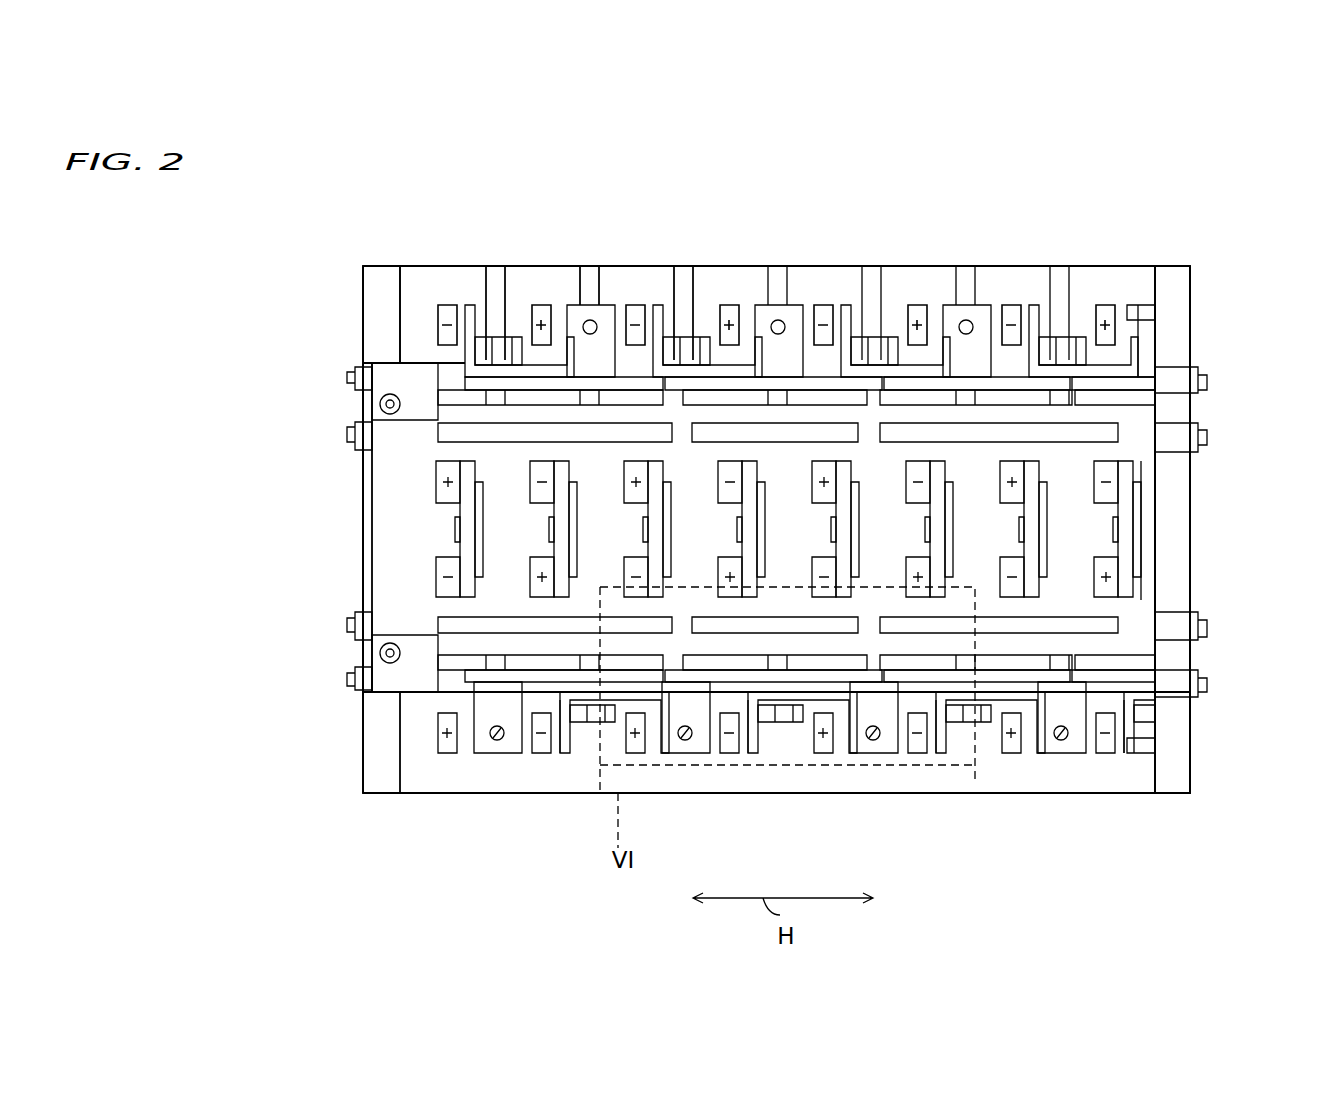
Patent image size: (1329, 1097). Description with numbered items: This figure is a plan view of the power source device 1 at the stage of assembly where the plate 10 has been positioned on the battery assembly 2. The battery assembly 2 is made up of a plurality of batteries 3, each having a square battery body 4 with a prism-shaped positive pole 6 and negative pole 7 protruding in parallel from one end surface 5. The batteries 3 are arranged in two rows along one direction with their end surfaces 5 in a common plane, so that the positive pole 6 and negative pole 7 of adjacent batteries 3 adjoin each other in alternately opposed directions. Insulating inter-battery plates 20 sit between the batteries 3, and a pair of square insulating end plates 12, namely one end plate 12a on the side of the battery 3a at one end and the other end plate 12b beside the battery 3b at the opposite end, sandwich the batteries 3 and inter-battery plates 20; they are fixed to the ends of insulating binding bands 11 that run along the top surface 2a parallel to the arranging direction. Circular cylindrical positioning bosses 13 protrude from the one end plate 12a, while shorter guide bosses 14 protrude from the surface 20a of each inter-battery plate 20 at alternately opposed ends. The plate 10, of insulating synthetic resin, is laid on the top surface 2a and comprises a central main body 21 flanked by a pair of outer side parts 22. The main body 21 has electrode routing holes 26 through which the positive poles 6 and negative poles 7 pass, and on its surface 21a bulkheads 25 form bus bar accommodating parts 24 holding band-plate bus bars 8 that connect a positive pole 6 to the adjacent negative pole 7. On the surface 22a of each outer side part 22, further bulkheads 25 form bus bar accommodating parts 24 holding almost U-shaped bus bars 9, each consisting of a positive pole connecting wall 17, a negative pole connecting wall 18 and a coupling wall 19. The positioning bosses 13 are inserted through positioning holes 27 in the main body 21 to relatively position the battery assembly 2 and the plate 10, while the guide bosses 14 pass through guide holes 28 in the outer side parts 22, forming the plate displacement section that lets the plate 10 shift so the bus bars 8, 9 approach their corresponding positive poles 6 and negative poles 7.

The power source device 1 is at (213, 186).
The battery assembly 2 is at (369, 254).
The top surface 2a is at (400, 262).
The battery 3 is at (1018, 259).
The one battery 3a is at (438, 258).
The second cell module 3b is at (1110, 268).
The battery body 4 is at (650, 268).
The one end surface 5 is at (1165, 795).
The positive pole 6 is at (436, 482).
The negative pole 7 is at (530, 482).
The bus bar 8 is at (860, 528).
The bus bar 9 is at (475, 294).
The plate 10 is at (362, 531).
The binding band 11 is at (1178, 440).
The end plate 12 is at (776, 529).
The one end plate 12a is at (378, 298).
The end plate 12b is at (1176, 570).
The positioning boss 13 is at (388, 396).
The guide boss 14 is at (490, 745).
The positive pole connecting wall 17 is at (651, 793).
The negative pole connecting wall 18 is at (566, 755).
The coupling wall 19 is at (626, 700).
The inter-battery plate 20 is at (784, 258).
The one surface 20a is at (494, 270).
The main body 21 is at (1155, 485).
The surface 21a is at (1143, 470).
The outer side part 22 is at (1150, 296).
The surface 22a is at (1150, 314).
The bus bar accommodating part 24 is at (577, 370).
The bulkhead 25 is at (498, 360).
The electrode routing hole 26 is at (812, 482).
The positioning hole 27 is at (380, 408).
The guide hole 28 is at (500, 740).